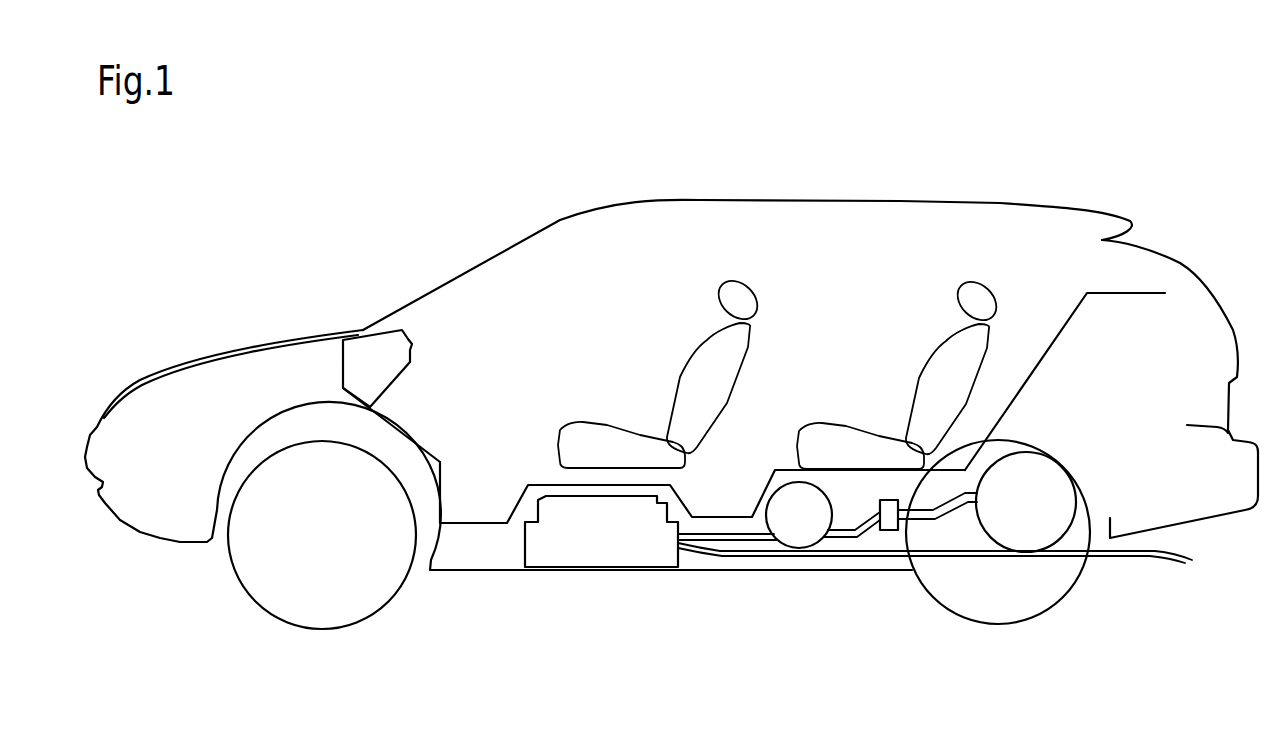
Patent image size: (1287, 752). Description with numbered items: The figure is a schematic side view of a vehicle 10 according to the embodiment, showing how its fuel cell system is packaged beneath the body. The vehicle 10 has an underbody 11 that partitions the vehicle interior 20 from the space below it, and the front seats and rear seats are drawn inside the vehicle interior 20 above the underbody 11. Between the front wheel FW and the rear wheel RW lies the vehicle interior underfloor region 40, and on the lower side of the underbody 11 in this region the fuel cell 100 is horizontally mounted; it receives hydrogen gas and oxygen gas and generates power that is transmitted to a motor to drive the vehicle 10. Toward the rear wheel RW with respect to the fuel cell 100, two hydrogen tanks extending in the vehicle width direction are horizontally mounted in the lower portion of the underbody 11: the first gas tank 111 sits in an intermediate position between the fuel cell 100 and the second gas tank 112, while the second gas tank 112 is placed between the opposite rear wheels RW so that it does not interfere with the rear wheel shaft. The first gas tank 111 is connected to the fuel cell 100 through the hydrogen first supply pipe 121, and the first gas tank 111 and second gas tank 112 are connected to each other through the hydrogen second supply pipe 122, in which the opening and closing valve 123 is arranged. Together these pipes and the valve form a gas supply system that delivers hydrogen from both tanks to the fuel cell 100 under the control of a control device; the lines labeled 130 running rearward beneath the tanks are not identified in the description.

The vehicle 10 is at (1093, 173).
The underbody 11 is at (732, 515).
The vehicle interior 20 is at (827, 277).
The vehicle interior underfloor region 40 is at (870, 509).
The fuel cell 100 is at (602, 548).
The first gas tank 111 is at (802, 533).
The second gas tank 112 is at (1043, 527).
The hydrogen first supply pipe 121 is at (712, 538).
The hydrogen second supply pipe 122 is at (855, 537).
The opening and closing valve 123 is at (888, 530).
The rear power cable 130 is at (760, 553).
The front wheel FW is at (337, 628).
The rear wheel RW is at (1047, 612).